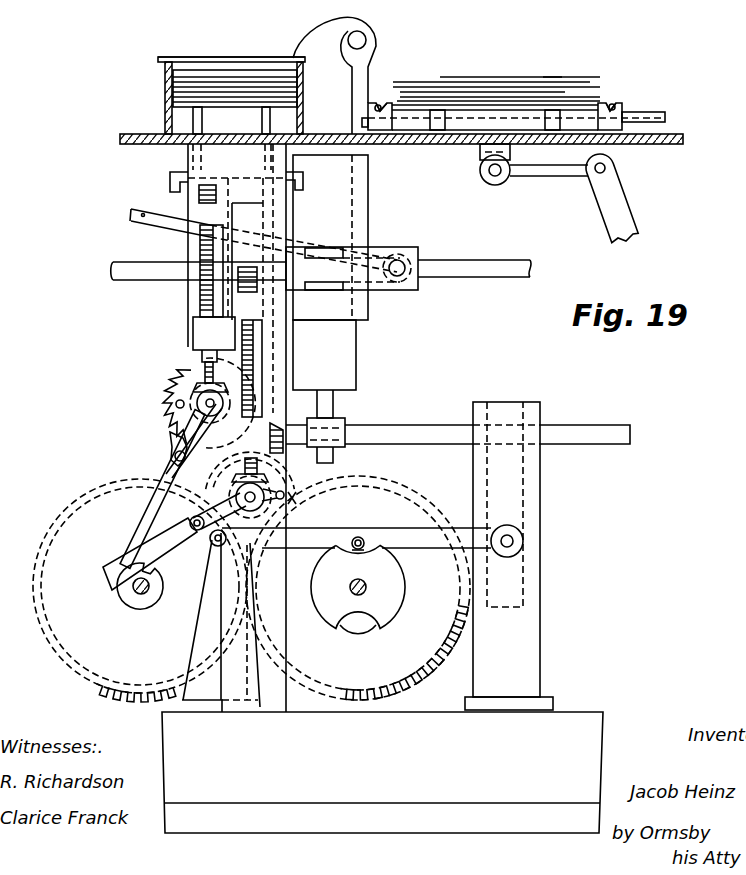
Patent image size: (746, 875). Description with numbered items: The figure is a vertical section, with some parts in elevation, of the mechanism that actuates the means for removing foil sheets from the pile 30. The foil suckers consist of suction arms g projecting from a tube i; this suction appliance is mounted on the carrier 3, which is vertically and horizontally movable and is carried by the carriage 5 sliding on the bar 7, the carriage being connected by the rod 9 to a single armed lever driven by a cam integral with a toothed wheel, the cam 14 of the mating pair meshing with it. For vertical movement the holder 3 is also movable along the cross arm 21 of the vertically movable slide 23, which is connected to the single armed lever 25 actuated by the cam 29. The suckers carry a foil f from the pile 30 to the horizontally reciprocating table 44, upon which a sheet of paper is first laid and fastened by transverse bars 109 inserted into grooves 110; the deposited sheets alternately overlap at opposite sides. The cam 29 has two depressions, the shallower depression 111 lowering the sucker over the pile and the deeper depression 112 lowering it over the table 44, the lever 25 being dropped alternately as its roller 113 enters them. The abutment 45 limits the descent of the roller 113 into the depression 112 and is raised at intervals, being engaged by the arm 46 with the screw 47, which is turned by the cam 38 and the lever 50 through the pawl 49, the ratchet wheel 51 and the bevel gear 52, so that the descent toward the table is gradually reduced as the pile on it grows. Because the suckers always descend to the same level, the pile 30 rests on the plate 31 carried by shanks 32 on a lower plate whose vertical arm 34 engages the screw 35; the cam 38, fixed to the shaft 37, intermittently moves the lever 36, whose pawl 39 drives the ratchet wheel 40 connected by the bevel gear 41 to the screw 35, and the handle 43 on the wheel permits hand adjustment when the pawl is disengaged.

The carrier 3 is at (320, 45).
The carriage 5 is at (366, 216).
The bar 7 is at (143, 280).
The rod 9 is at (143, 215).
The cam 14 is at (404, 493).
The cross arm 21 is at (573, 427).
The vertically movable slide 23 is at (485, 418).
The single armed lever 25 is at (443, 543).
The cam 29 is at (402, 613).
The pile 30 is at (198, 80).
The plate 31 is at (165, 110).
The shanks 32 is at (263, 117).
The vertical arm 34 is at (230, 248).
The screw 35 is at (200, 242).
The lever 36 is at (148, 508).
The shaft 37 is at (151, 593).
The cam 38 is at (128, 583).
The pawl 39 is at (172, 443).
The ratchet wheel 40 is at (162, 386).
The bevel gear 41 is at (190, 390).
The handle 43 is at (176, 404).
The table 44 is at (462, 100).
The abutment 45 is at (285, 447).
The arm 46 is at (274, 377).
The screw 47 is at (256, 344).
The pawl 49 is at (192, 518).
The lever 50 is at (153, 547).
The ratchet wheel 51 is at (222, 480).
The bevel gear 52 is at (285, 498).
The transverse bars 109 is at (378, 103).
The grooves 110 is at (392, 101).
The depression 111 is at (358, 551).
The depression 112 is at (358, 614).
The roller 113 is at (362, 539).
The foil f is at (543, 78).
The suction arms g is at (252, 57).
The tube i is at (366, 38).